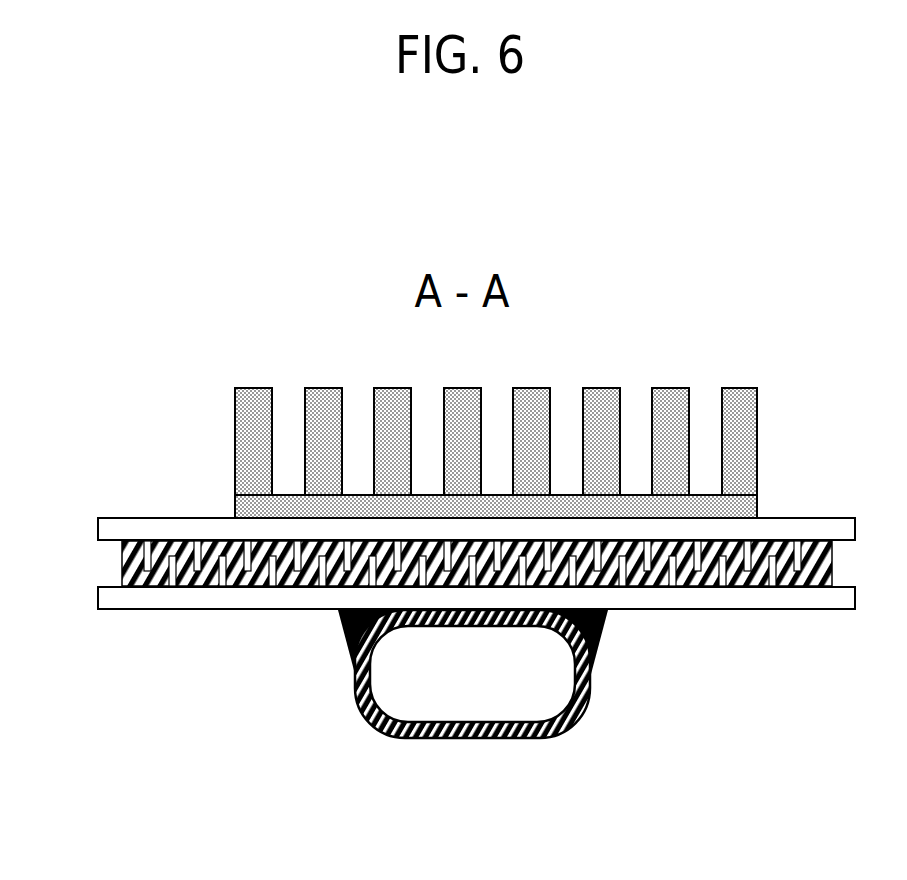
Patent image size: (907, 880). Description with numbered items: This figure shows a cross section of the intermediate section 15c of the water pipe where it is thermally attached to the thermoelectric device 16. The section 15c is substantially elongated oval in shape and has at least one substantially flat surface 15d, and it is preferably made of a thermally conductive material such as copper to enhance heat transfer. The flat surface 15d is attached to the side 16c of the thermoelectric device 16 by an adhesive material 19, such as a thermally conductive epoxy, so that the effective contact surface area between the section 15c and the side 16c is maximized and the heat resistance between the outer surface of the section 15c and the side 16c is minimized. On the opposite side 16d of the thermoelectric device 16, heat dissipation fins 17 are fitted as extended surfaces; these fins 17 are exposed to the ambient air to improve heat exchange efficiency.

The heat dissipation fins 17 is at (738, 408).
The thermoelectric device 16 is at (476, 577).
The side of thermoelectric device 16d is at (172, 523).
The side of thermoelectric device 16c is at (192, 600).
The adhesive material 19 is at (597, 638).
The intermediate section of water pipe 15c is at (368, 718).
The substantially flat surface 15d is at (452, 628).